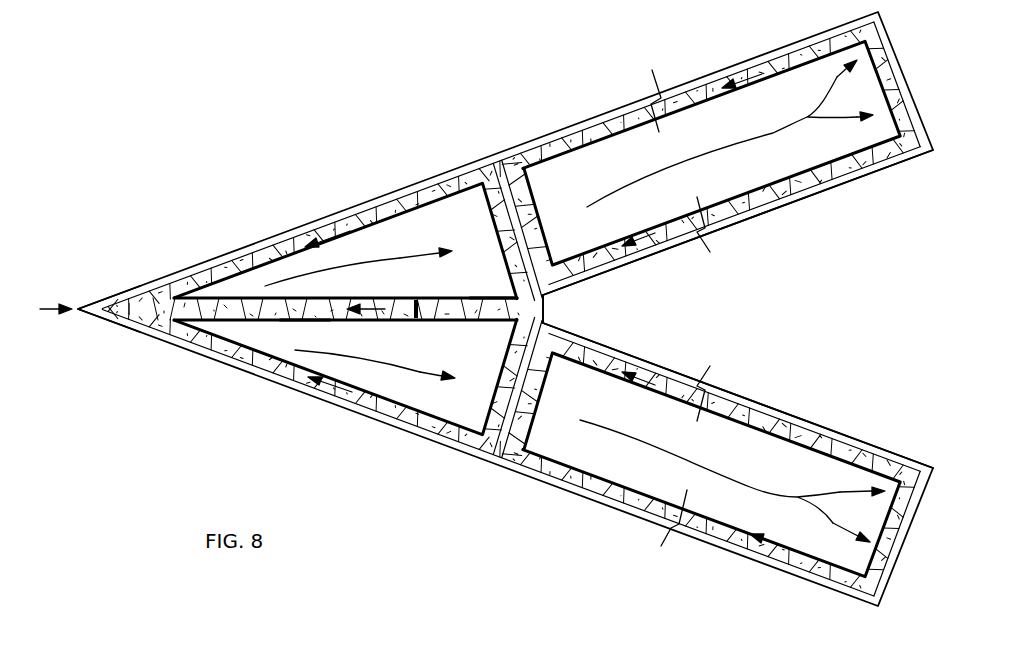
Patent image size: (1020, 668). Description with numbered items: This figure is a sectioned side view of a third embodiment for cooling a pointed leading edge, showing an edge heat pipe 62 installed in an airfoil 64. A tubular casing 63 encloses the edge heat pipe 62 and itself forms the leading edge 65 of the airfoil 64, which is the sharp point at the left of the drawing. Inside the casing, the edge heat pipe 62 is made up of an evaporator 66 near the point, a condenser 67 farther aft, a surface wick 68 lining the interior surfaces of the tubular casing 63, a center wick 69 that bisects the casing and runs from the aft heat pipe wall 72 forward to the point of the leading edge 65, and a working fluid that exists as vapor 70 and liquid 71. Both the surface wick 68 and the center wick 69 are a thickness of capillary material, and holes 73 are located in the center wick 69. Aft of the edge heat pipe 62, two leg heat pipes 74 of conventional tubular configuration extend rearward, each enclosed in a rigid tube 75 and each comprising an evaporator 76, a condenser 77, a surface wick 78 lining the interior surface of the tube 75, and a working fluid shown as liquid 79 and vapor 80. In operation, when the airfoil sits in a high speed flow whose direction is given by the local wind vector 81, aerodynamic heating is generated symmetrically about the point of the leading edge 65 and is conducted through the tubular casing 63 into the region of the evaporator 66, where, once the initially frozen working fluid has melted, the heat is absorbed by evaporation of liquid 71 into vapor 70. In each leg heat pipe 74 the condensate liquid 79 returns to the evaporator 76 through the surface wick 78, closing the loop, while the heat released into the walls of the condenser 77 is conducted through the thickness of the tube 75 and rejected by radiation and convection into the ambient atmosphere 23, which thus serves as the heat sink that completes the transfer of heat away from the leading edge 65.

The ambient atmosphere 23 is at (249, 209).
The edge heat pipe 62 is at (349, 205).
The tubular casing 63 is at (415, 188).
The airfoil 64 is at (499, 147).
The leading edge 65 is at (101, 319).
The evaporator 66 is at (264, 297).
The condenser 67 is at (492, 267).
The surface wick 68 is at (454, 418).
The center wick 69 is at (407, 301).
The vapor 70 is at (390, 261).
The liquid 71 is at (372, 304).
The aft heat pipe wall 72 is at (547, 309).
The holes 73 is at (441, 303).
The leg heat pipes 74 is at (738, 309).
The rigid tube 75 is at (712, 76).
The evaporator 76 is at (562, 211).
The condenser 77 is at (874, 104).
The surface wick 78 is at (769, 188).
The liquid 79 is at (650, 234).
The vapor 80 is at (735, 146).
The local wind vector 81 is at (46, 309).